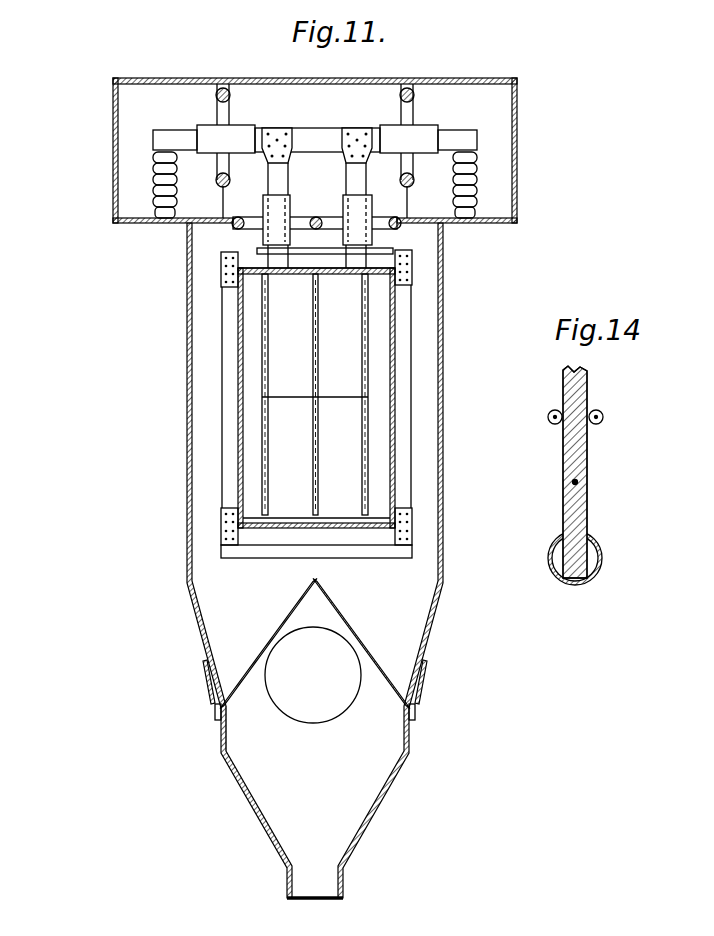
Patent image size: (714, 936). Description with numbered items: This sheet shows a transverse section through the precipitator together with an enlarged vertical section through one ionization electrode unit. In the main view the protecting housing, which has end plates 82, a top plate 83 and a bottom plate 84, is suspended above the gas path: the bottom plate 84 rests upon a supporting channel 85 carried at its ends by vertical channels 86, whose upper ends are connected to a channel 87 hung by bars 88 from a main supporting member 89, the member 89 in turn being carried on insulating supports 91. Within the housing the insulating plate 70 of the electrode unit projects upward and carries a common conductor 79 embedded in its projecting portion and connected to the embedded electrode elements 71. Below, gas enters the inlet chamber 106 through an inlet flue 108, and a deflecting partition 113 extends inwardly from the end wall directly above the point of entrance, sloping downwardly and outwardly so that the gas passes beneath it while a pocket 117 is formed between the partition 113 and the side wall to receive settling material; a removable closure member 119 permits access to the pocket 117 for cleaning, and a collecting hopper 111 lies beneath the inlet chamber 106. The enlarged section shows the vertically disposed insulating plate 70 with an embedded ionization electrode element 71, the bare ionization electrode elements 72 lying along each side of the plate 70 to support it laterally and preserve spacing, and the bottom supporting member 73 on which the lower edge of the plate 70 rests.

In FIG. 11, the insulating plate 70 is at (262, 447).
In FIG. 14, the insulating plate 70 is at (590, 500).
In FIG. 14, the ionization electrode elements 71 is at (580, 481).
In FIG. 14, the bare ionization electrode elements 72 is at (603, 413).
In FIG. 14, the bottom supporting member 73 is at (600, 550).
In FIG. 11, the common conductor 79 is at (244, 394).
In FIG. 11, the end plates 82 is at (396, 367).
In FIG. 11, the top plate 83 is at (343, 274).
In FIG. 11, the bottom plate 84 is at (332, 394).
In FIG. 11, the supporting channel 85 is at (275, 535).
In FIG. 11, the vertical channels 86 is at (228, 402).
In FIG. 11, the channel 87 is at (378, 258).
In FIG. 11, the bars 88 is at (357, 181).
In FIG. 11, the main supporting member 89 is at (327, 127).
In FIG. 11, the insulating supports 91 is at (155, 172).
In FIG. 11, the inlet chamber 106 is at (238, 754).
In FIG. 11, the inlet flues 108 is at (317, 713).
In FIG. 11, the collecting hopper 111 is at (373, 810).
In FIG. 11, the deflecting partition 113 is at (315, 644).
In FIG. 11, the pocket 117 is at (383, 658).
In FIG. 11, the removable closure member 119 is at (208, 683).